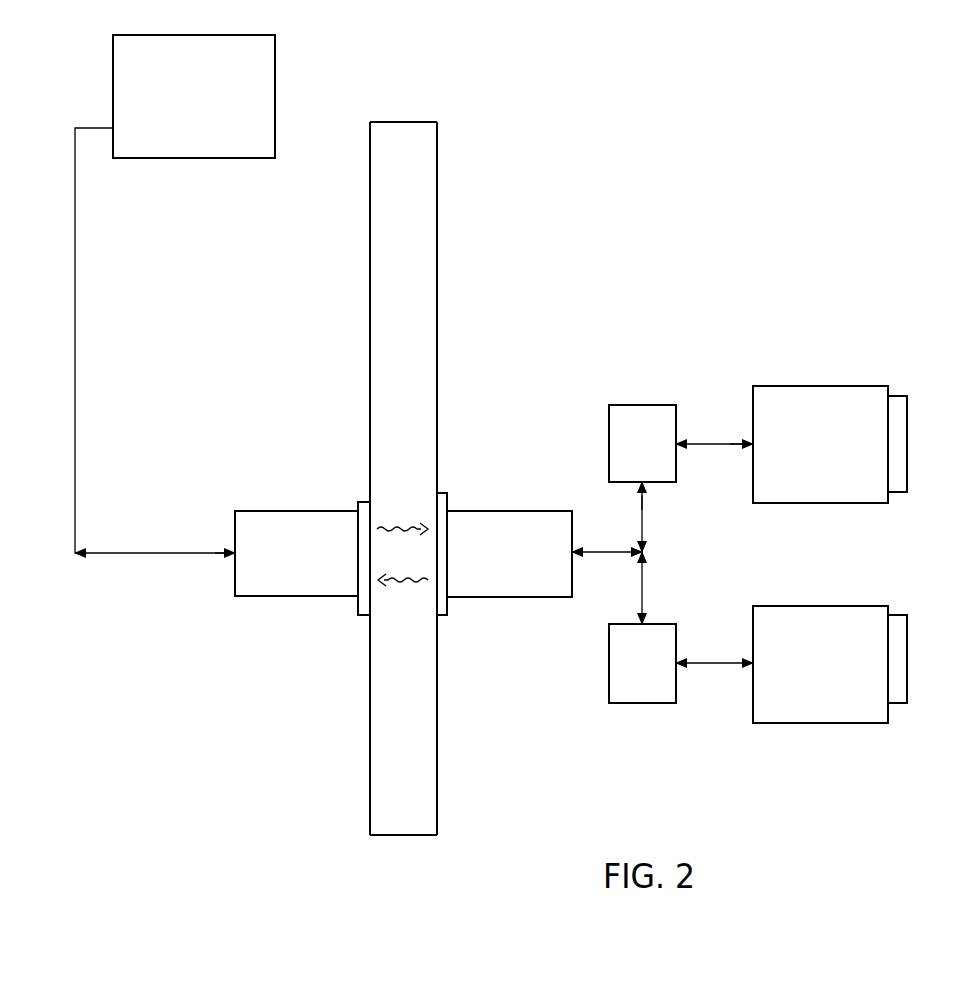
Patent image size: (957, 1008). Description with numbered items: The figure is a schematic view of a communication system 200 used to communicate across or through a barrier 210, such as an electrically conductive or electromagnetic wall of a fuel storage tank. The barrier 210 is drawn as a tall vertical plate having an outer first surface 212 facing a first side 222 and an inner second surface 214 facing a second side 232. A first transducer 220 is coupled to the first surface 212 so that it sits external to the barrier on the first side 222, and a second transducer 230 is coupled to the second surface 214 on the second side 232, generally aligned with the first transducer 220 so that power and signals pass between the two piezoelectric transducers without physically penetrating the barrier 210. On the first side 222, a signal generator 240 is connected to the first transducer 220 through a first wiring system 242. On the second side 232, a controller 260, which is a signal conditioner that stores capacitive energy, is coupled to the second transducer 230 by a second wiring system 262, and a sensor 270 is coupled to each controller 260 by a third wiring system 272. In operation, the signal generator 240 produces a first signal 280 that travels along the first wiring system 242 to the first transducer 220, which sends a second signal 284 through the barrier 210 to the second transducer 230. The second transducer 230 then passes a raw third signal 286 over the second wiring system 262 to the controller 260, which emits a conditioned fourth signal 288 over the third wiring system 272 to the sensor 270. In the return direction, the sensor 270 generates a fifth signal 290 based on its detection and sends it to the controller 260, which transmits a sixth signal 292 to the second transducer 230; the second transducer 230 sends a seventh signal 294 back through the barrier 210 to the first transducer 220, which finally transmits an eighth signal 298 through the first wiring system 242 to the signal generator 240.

The communication system 200 is at (853, 762).
The barrier 210 is at (404, 479).
The first surface 212 is at (366, 740).
The second surface 214 is at (442, 731).
The first transducer 220 is at (305, 590).
The first side 222 is at (283, 603).
The second transducer 230 is at (522, 592).
The second side 232 is at (504, 596).
The signal generator 240 is at (213, 148).
The first wiring system 242 is at (82, 403).
The controller 260 is at (644, 404).
The second wiring system 262 is at (690, 536).
The sensor 270 is at (856, 404).
The third wiring system 272 is at (713, 438).
The first signal 280 is at (212, 548).
The second signal 284 is at (402, 525).
The third signal 286 is at (642, 503).
The fourth signal 288 is at (745, 450).
The fifth signal 290 is at (692, 448).
The sixth signal 292 is at (604, 558).
The seventh signal 294 is at (404, 584).
The eighth signal 298 is at (95, 557).